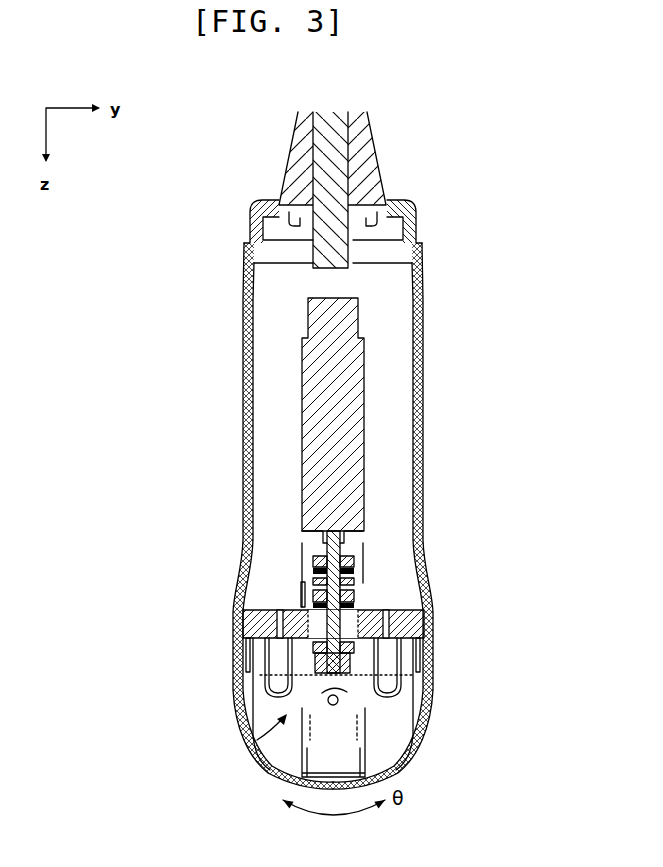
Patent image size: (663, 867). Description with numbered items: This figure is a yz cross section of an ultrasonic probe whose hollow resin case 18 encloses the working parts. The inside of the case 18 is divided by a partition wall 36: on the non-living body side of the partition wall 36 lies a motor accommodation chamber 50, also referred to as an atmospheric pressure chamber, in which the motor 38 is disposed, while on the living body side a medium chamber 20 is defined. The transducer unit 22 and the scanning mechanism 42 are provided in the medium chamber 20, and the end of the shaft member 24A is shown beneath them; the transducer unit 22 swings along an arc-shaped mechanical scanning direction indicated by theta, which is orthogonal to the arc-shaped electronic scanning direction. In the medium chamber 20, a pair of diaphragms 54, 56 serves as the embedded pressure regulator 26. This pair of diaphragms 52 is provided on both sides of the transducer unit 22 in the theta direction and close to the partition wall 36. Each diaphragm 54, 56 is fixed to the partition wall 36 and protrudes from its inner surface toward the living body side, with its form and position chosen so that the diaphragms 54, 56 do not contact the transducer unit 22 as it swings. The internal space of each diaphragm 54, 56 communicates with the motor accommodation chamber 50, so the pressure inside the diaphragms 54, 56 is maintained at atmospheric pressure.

The case 18 is at (246, 334).
The motor accommodation chamber 50 is at (270, 478).
The motor 38 is at (364, 432).
The scanning mechanism 42 is at (357, 653).
The partition wall 36 is at (403, 611).
The diaphragm 54 is at (253, 690).
The pair of diaphragms 52 is at (208, 667).
The embedded pressure regulator 26 is at (268, 683).
The diaphragm 56 is at (400, 683).
The medium chamber 20 is at (277, 748).
The transducer unit 22 is at (302, 755).
The end of the shaft member 24A is at (340, 697).